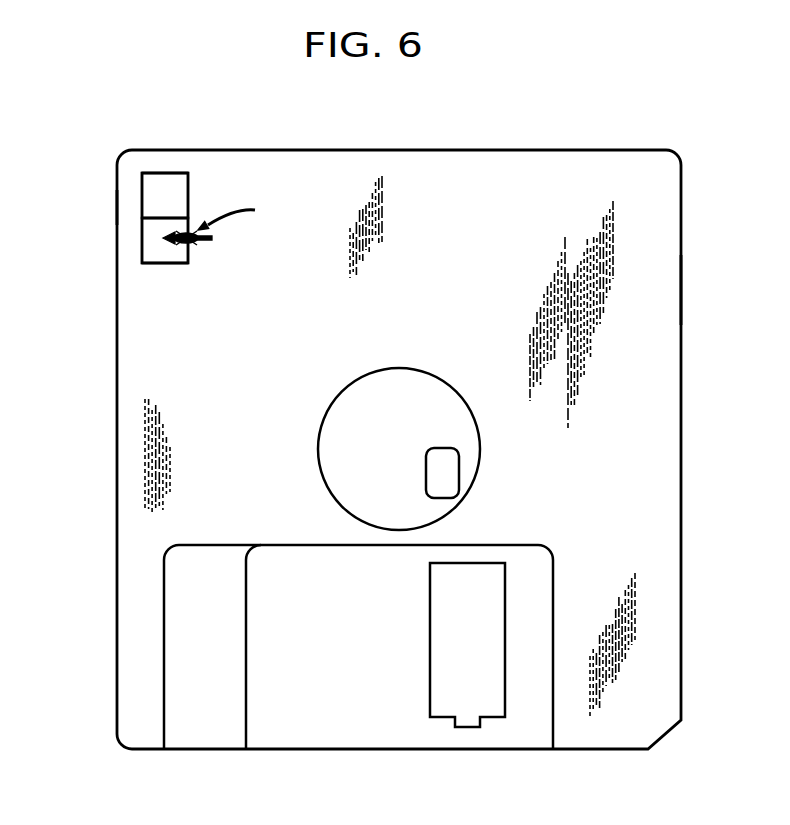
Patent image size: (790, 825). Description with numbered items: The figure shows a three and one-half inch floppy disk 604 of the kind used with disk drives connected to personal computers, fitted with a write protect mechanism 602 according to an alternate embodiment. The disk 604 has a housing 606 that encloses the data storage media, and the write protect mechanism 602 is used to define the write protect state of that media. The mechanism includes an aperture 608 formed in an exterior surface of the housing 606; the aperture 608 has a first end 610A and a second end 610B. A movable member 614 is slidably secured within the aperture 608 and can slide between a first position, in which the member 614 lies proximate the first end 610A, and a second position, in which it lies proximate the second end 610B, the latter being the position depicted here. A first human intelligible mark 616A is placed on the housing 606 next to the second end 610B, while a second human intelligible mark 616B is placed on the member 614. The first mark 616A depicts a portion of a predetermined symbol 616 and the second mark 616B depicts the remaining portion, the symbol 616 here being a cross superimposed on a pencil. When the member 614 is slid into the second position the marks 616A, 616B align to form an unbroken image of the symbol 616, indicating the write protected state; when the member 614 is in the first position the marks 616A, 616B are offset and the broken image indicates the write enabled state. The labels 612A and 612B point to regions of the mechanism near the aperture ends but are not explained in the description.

The write protect mechanism 602 is at (112, 208).
The disk 604 is at (535, 122).
The housing 606 is at (665, 290).
The aperture 608 is at (190, 197).
The first end 610A is at (176, 173).
The second end 610B is at (176, 264).
The first tab position 612A is at (149, 182).
The second tab position 612B is at (167, 244).
The movable member 614 is at (148, 235).
The symbol 616 is at (243, 213).
The first human intelligible mark 616A is at (212, 240).
The second human intelligible mark 616B is at (181, 264).